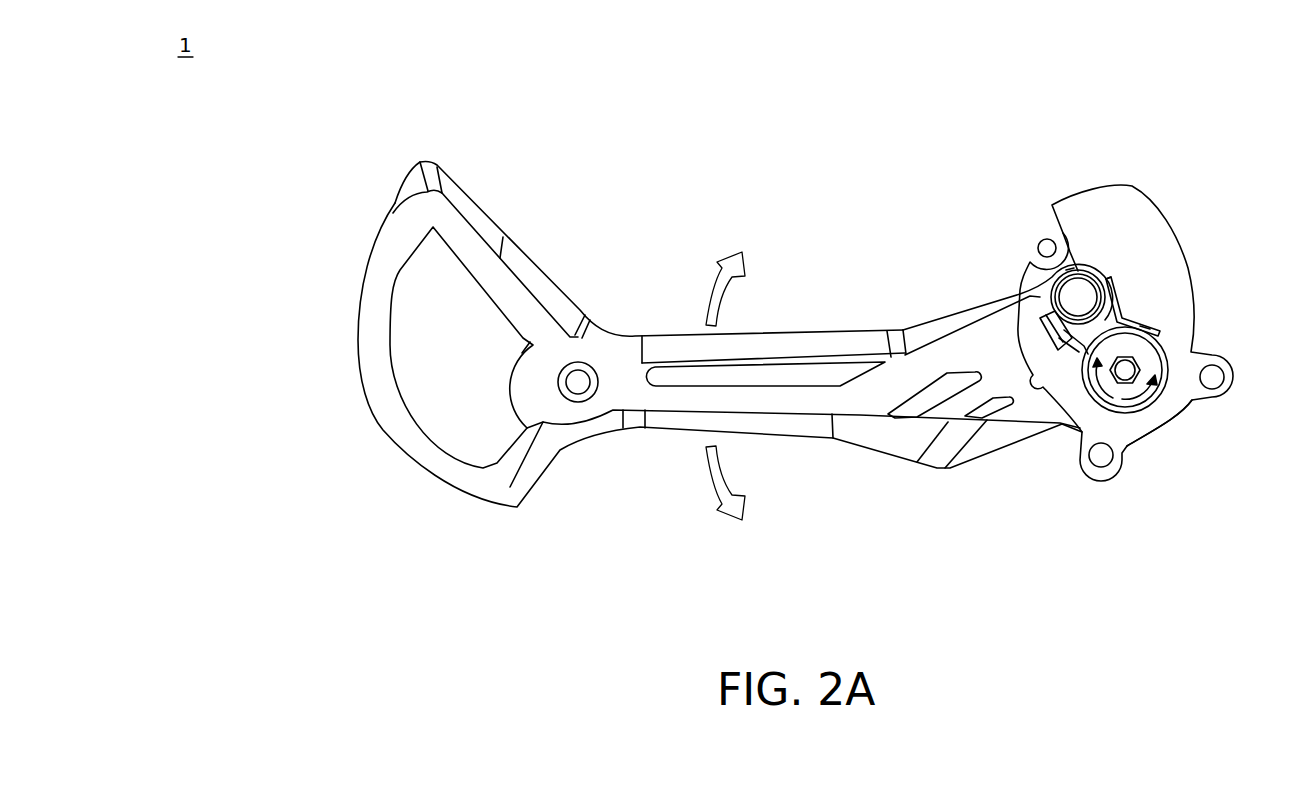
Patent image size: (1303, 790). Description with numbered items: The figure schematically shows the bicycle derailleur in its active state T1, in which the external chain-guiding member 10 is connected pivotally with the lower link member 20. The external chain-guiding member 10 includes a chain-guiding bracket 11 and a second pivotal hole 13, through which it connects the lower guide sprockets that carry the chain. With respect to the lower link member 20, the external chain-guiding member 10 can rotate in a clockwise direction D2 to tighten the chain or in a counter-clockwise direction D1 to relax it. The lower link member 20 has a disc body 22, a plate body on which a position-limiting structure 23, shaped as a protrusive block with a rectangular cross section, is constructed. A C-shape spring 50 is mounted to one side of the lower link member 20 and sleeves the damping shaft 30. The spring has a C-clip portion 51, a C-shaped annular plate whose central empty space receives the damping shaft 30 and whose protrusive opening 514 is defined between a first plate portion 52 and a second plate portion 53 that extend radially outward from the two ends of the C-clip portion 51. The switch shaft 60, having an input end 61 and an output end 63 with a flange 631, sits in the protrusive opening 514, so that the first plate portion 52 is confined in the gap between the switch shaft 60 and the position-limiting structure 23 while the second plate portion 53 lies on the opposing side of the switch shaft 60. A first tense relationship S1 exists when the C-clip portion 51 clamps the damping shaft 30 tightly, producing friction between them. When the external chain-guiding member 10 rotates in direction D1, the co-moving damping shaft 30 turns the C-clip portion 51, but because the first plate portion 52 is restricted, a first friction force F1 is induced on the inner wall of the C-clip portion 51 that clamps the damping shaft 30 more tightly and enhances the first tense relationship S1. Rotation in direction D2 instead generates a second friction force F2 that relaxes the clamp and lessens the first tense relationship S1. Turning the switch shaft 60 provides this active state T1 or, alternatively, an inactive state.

The external chain-guiding member 10 is at (1187, 215).
The chain-guiding bracket 11 is at (770, 400).
The second pivotal hole 13 is at (578, 382).
The lower link member 20 is at (1192, 412).
The disc body 22 is at (1165, 417).
The position-limiting structure 23 is at (1035, 328).
The damping shaft 30 is at (1128, 368).
The C-shape spring 50 is at (1147, 372).
The C-clip portion 51 is at (1143, 405).
The first plate portion 52 is at (1087, 345).
The second plate portion 53 is at (1127, 317).
The protrusive opening 514 is at (1110, 300).
The switch shaft 60 is at (1095, 263).
The input end 61 is at (1087, 293).
The output end 63 is at (1057, 310).
The flange 631 is at (1071, 263).
The first tense relationship S1 is at (1144, 322).
The active state T1 is at (1042, 252).
The first friction force F1 is at (1130, 400).
The second friction force F2 is at (1107, 393).
The direction D1 is at (717, 487).
The direction D2 is at (718, 283).